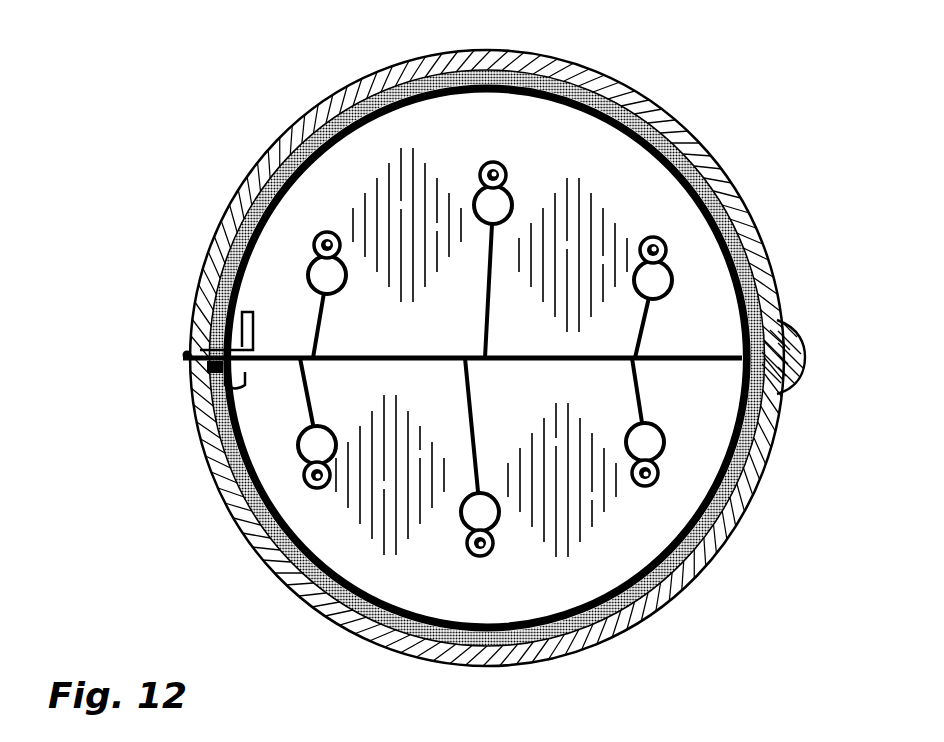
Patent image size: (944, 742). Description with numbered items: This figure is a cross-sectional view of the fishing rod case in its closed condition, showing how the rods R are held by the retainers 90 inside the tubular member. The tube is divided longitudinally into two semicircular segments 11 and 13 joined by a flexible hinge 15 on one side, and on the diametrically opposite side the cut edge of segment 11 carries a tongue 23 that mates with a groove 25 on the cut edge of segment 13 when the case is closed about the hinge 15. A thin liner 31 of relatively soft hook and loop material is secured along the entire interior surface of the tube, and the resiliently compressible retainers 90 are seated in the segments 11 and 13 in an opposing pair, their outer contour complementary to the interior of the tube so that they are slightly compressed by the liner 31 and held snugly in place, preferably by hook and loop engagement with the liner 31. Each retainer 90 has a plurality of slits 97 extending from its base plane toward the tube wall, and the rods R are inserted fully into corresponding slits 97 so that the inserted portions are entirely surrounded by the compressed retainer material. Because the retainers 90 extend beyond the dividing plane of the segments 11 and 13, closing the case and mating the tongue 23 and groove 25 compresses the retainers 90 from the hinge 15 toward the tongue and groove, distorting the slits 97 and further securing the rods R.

The segment 11 is at (716, 157).
The segment 13 is at (655, 622).
The hinge 15 is at (805, 372).
The tongue 23 is at (205, 352).
The groove 25 is at (213, 367).
The liner 31 is at (556, 72).
The retainer 90 is at (717, 278).
The slit 97 is at (482, 300).
The rod R is at (310, 275).